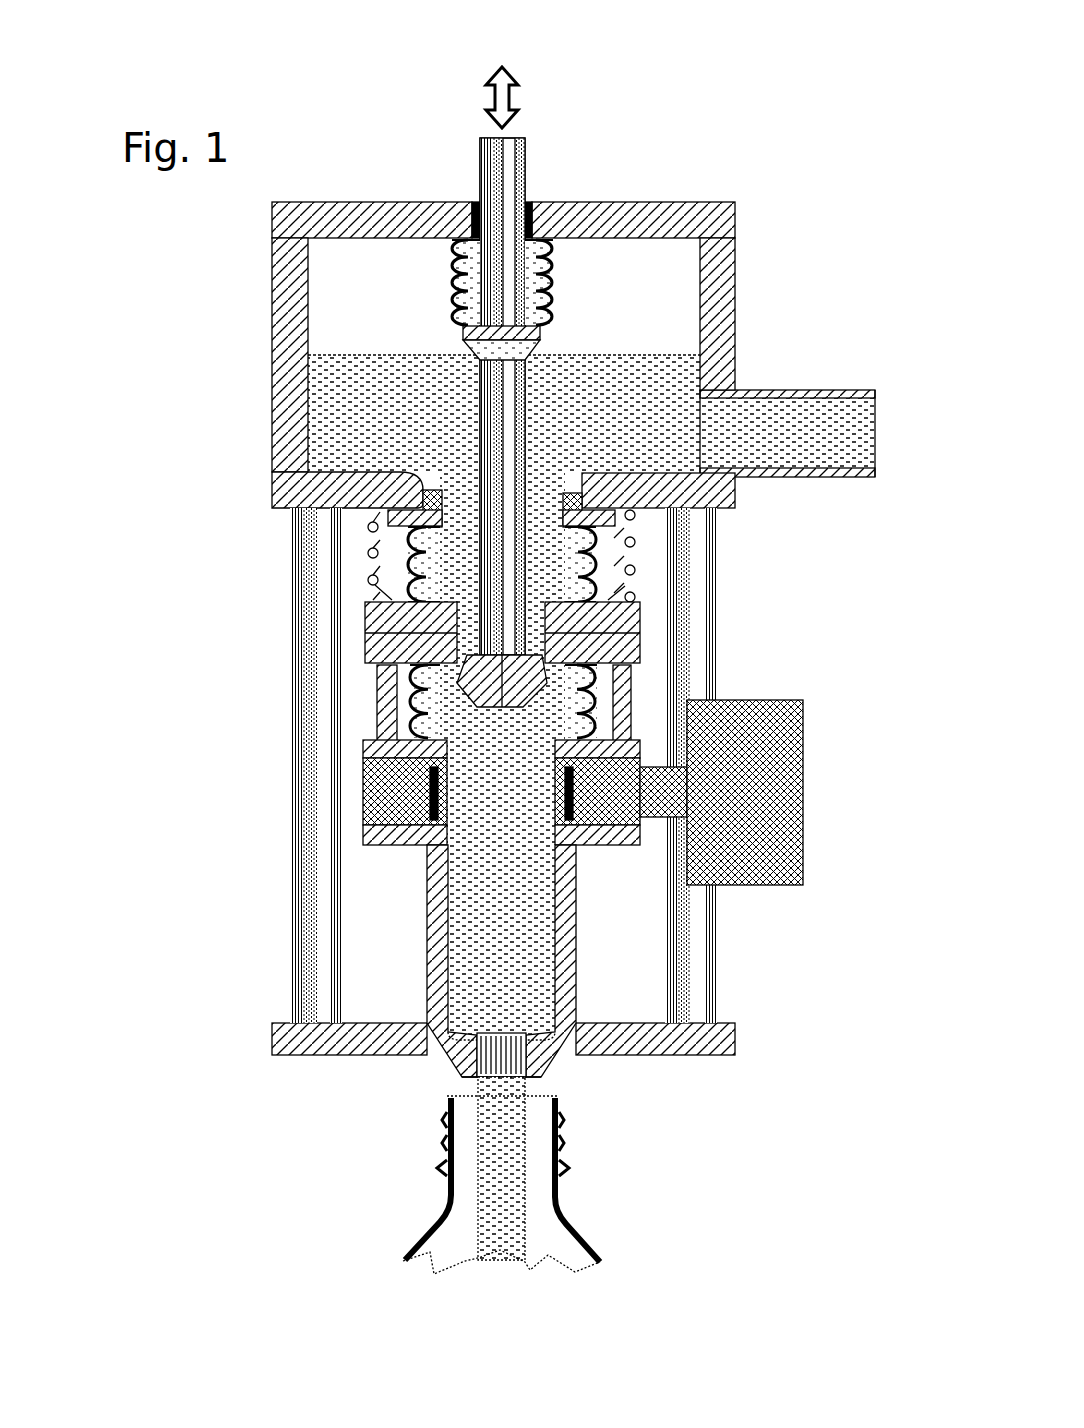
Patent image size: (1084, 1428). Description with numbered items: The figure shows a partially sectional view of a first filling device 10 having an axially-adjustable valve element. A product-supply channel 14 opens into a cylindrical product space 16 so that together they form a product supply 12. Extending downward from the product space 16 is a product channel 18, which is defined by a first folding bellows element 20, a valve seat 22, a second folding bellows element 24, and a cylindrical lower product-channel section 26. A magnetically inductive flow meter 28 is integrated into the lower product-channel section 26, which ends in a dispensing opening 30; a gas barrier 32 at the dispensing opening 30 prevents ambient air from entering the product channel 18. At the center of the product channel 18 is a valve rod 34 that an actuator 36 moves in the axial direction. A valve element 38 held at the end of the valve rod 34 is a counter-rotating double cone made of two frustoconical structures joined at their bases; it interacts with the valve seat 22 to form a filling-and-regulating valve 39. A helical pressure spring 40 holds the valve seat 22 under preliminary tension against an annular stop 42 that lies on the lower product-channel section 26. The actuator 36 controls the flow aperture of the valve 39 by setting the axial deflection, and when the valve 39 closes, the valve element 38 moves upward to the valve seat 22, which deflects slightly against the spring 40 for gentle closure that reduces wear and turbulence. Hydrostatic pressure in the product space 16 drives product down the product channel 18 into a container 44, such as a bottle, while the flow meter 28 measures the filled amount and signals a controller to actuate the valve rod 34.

The filling device 10 is at (333, 143).
The product supply 12 is at (767, 258).
The product-supply channel 14 is at (777, 432).
The product space 16 is at (606, 275).
The product channel 18 is at (345, 713).
The first folding bellows element 20 is at (405, 537).
The valve seat 22 is at (636, 608).
The second folding bellows element 24 is at (410, 705).
The lower product-channel section 26 is at (607, 908).
The magnetically inductive flow meter 28 is at (781, 822).
The dispensing opening 30 is at (423, 1078).
The gas barrier 32 is at (522, 1042).
The valve rod 34 is at (490, 465).
The actuator 36 is at (520, 95).
The valve element 38 is at (513, 693).
The filling-and-regulating valve 39 is at (390, 592).
The spring 40 is at (372, 545).
The annular stop 42 is at (618, 712).
The container 44 is at (540, 1225).